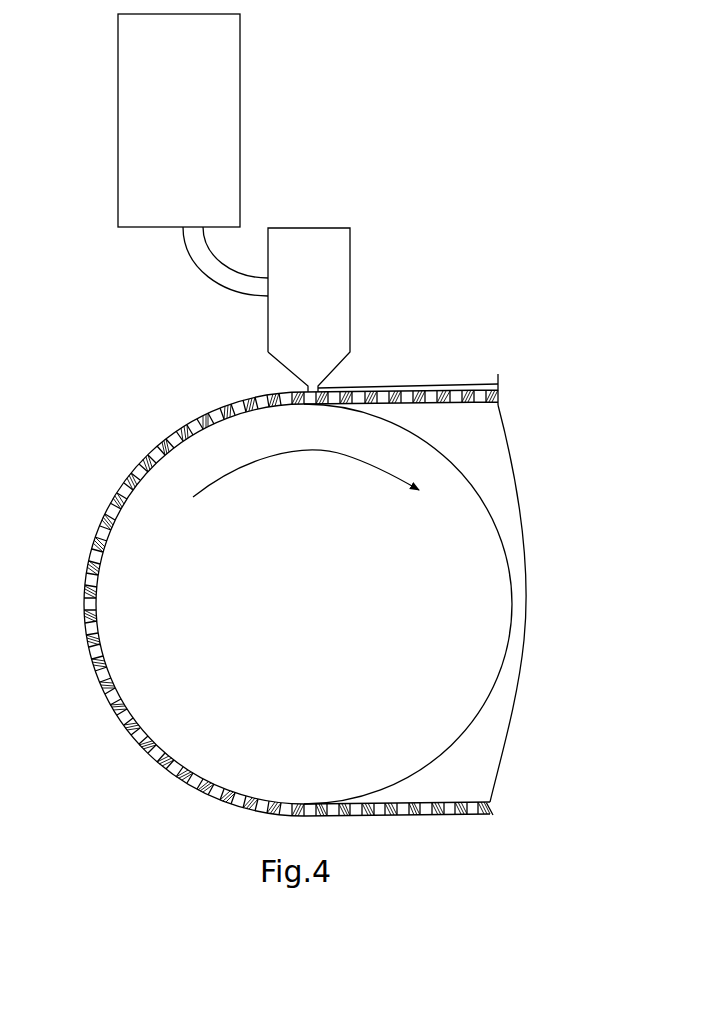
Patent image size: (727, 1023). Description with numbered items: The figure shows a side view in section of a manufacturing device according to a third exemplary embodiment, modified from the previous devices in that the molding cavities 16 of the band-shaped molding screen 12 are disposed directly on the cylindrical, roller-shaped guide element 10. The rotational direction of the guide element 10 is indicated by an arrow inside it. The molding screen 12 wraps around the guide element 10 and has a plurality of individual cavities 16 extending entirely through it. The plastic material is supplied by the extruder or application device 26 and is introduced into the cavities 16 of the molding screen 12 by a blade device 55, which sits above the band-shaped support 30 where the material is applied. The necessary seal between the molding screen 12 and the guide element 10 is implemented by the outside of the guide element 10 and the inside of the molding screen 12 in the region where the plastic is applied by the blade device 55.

The guide element 10 is at (353, 720).
The molding screen 12 is at (397, 388).
The molding cavities 16 is at (187, 428).
The extruder or application device 26 is at (244, 150).
The band-shaped support 30 is at (456, 388).
The blade device 55 is at (353, 253).